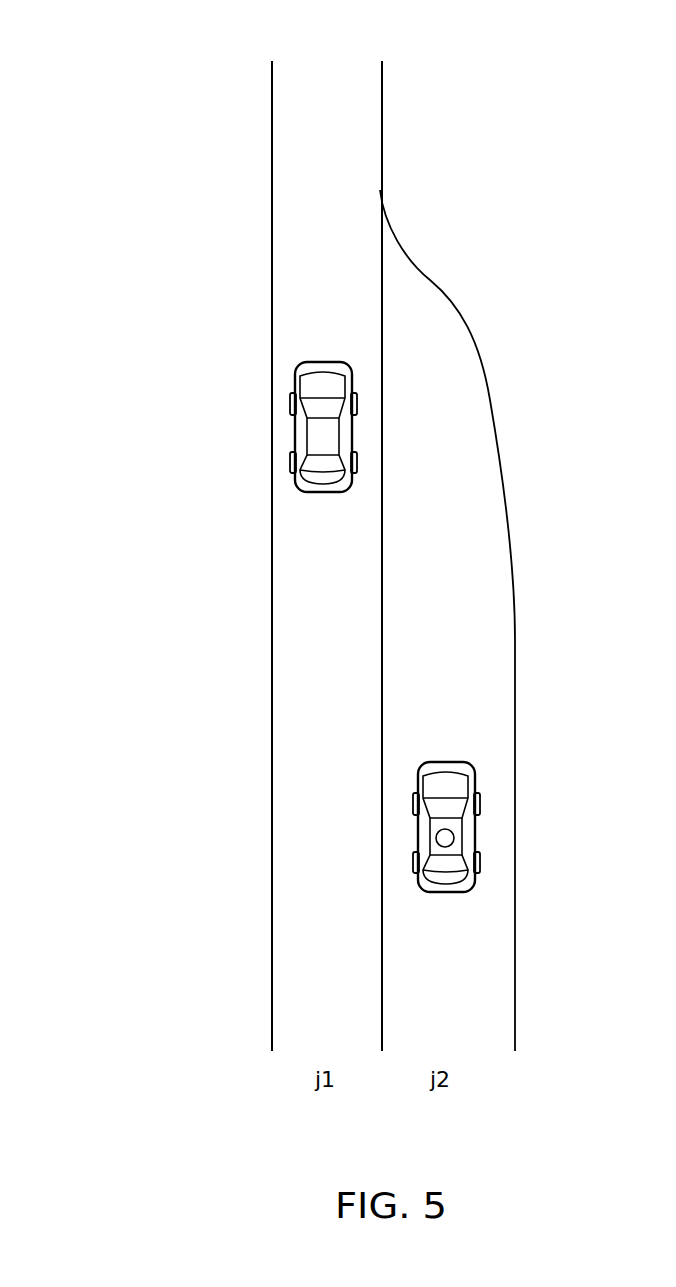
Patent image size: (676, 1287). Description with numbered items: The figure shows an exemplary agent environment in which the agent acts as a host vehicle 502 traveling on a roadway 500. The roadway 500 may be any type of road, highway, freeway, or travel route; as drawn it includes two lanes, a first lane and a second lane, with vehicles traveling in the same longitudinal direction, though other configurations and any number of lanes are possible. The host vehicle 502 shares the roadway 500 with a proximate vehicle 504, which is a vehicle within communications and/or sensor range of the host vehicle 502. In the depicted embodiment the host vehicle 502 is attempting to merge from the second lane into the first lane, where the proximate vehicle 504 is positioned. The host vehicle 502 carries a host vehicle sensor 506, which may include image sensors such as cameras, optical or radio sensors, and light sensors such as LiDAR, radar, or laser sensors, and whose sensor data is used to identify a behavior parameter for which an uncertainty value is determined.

The roadway 500 is at (117, 48).
The host vehicle 502 is at (477, 835).
The proximate vehicle 504 is at (296, 390).
The host vehicle sensor 506 is at (446, 847).